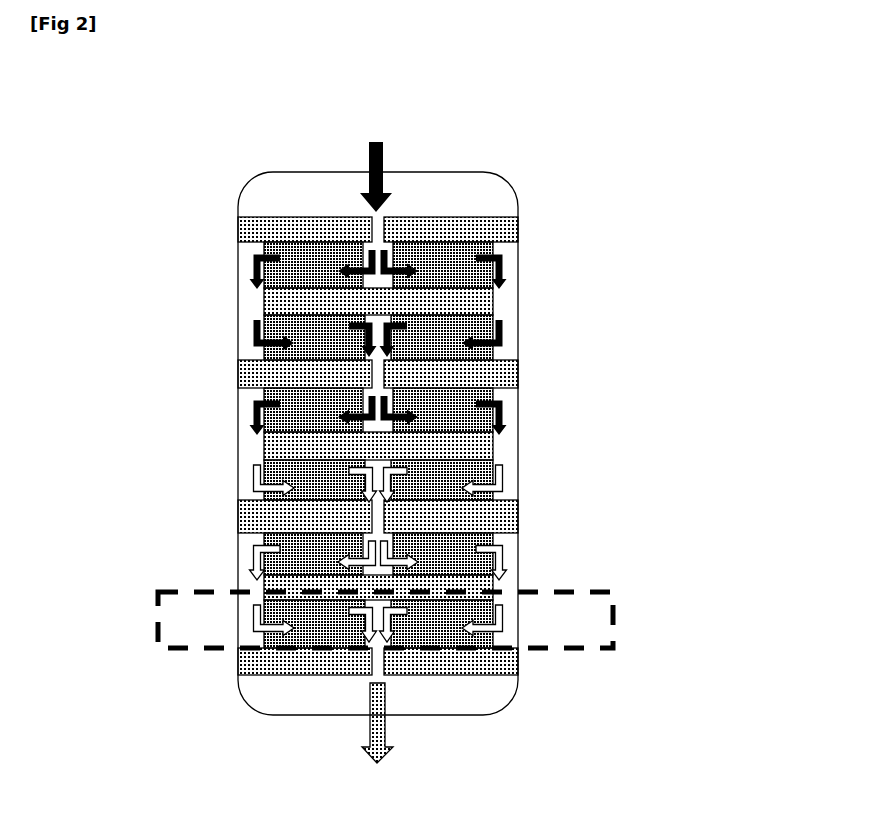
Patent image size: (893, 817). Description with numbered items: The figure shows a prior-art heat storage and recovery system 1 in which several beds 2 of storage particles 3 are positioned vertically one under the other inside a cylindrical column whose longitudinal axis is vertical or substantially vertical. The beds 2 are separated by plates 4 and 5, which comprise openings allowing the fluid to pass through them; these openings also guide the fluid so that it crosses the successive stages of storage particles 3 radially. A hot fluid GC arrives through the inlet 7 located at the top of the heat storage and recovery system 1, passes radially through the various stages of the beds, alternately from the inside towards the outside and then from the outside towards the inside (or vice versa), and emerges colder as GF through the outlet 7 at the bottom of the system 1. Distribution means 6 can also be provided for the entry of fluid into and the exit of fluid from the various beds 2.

The heat storage and recovery system 1 is at (527, 493).
The bed 2 is at (575, 610).
The storage particles 3 is at (445, 263).
The plate 4 is at (292, 230).
The plate 5 is at (305, 308).
The distribution means 6 is at (502, 348).
The inlet / outlet 7 is at (389, 158).